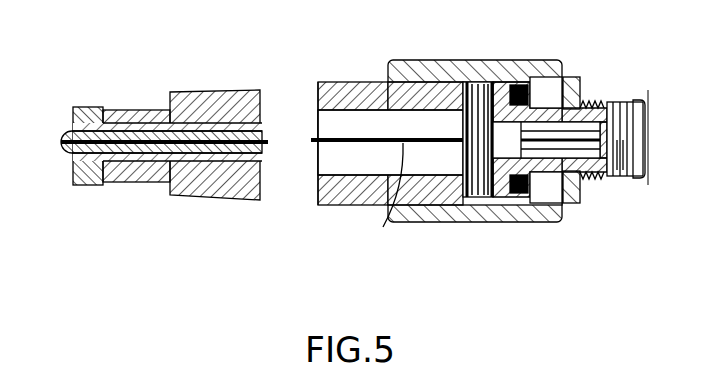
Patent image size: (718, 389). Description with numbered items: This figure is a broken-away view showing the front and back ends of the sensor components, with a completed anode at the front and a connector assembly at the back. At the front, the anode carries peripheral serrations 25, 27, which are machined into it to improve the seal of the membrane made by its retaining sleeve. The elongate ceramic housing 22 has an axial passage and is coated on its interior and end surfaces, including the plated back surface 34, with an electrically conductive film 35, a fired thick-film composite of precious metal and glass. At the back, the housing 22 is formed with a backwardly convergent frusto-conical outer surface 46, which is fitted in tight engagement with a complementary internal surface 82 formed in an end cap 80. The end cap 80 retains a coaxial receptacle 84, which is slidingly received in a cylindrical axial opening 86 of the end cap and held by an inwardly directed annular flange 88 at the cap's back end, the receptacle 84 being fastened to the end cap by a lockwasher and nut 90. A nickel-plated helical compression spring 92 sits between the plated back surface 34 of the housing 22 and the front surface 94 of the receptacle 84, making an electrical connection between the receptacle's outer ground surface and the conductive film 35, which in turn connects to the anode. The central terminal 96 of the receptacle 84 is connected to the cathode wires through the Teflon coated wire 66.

The ceramic housing 22 is at (220, 92).
The peripheral serration 25 is at (87, 107).
The peripheral serration 27 is at (108, 108).
The back end surface 34 is at (455, 118).
The electrically conductive film 35 is at (318, 166).
The frusto-conical outer surface 46 is at (436, 82).
The Teflon coated wire 66 is at (383, 227).
The end cap 80 is at (500, 68).
The internal surface 82 is at (384, 88).
The coaxial receptacle 84 is at (560, 212).
The cylindrical axial opening 86 is at (583, 92).
The annular flange 88 is at (536, 86).
The lockwasher and nut 90 is at (576, 80).
The helical compression spring 92 is at (478, 200).
The front surface 94 is at (486, 200).
The central terminal 96 is at (463, 196).